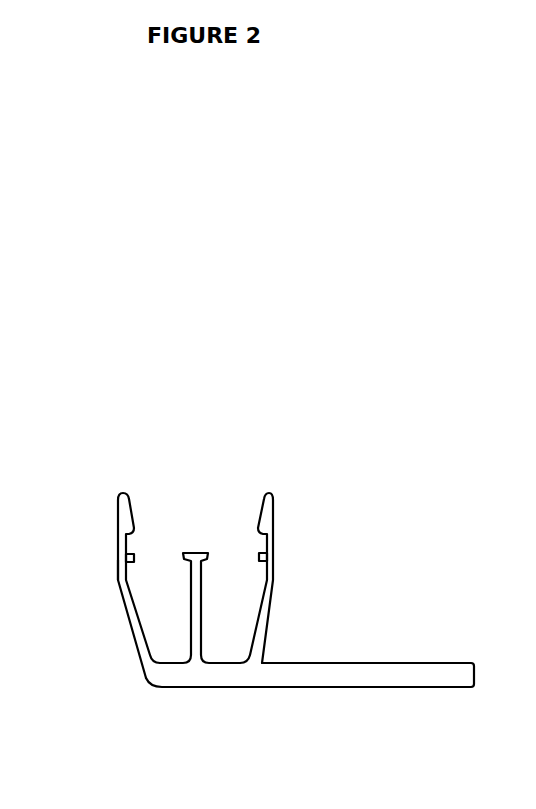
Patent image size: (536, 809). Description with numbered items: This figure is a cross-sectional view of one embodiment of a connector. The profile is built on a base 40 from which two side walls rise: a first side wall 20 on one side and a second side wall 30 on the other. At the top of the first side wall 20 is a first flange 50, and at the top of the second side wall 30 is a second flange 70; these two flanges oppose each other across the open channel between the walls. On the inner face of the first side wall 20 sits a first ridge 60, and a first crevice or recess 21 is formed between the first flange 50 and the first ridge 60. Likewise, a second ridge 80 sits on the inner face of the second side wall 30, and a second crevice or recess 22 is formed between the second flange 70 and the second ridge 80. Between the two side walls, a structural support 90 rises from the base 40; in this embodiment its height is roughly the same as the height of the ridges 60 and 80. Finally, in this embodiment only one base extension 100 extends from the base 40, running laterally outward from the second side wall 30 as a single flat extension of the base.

The base extension 100 is at (362, 690).
The first side wall 20 is at (115, 590).
The second side wall 30 is at (278, 590).
The base 40 is at (202, 690).
The first flange 50 is at (133, 522).
The second flange 70 is at (258, 525).
The first crevice or recess 21 is at (135, 542).
The second crevice or recess 22 is at (257, 540).
The first ridge 60 is at (128, 556).
The second ridge 80 is at (265, 556).
The structural support 90 is at (199, 548).